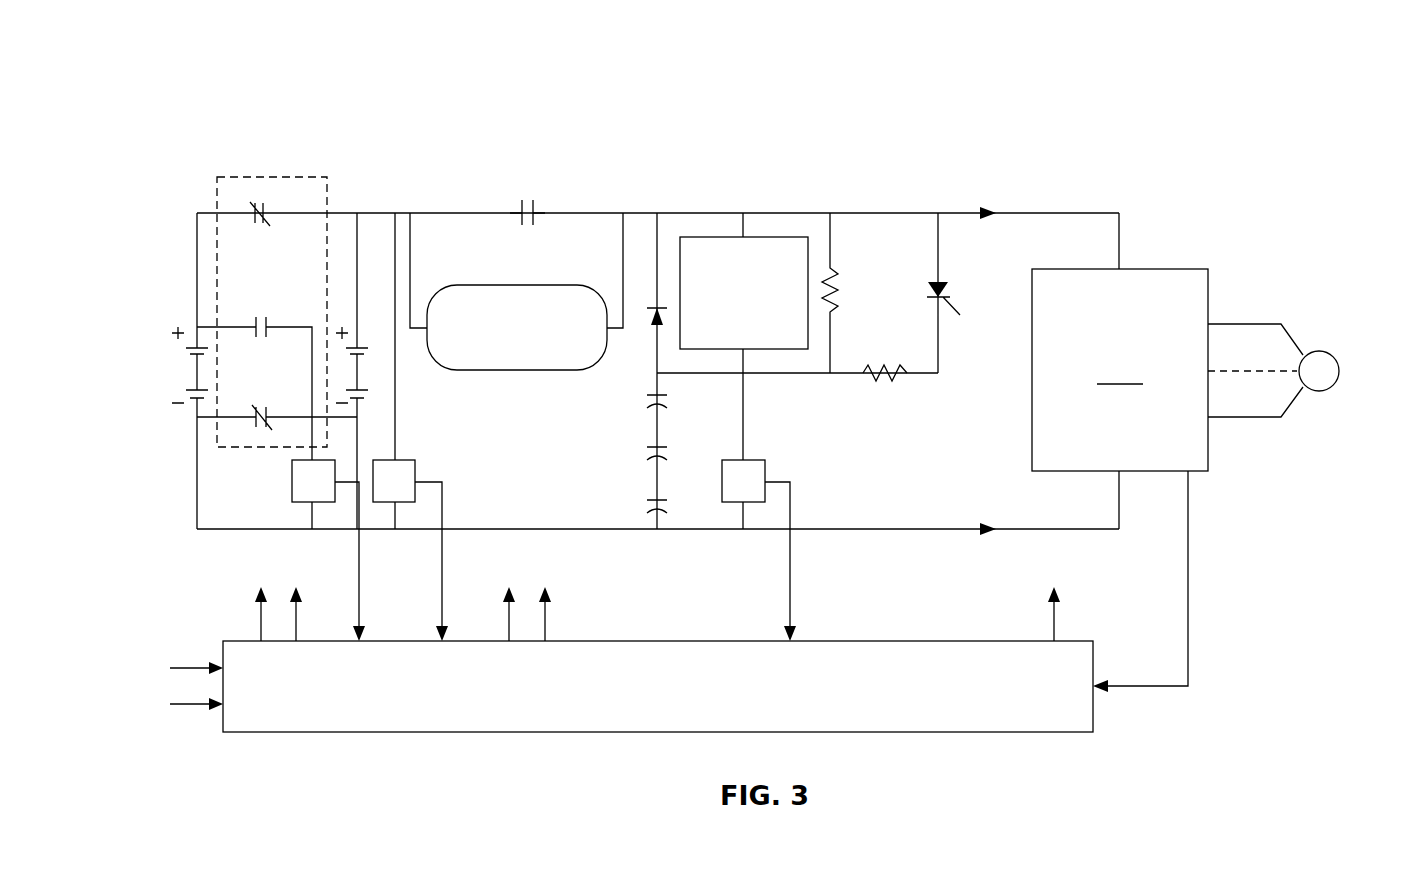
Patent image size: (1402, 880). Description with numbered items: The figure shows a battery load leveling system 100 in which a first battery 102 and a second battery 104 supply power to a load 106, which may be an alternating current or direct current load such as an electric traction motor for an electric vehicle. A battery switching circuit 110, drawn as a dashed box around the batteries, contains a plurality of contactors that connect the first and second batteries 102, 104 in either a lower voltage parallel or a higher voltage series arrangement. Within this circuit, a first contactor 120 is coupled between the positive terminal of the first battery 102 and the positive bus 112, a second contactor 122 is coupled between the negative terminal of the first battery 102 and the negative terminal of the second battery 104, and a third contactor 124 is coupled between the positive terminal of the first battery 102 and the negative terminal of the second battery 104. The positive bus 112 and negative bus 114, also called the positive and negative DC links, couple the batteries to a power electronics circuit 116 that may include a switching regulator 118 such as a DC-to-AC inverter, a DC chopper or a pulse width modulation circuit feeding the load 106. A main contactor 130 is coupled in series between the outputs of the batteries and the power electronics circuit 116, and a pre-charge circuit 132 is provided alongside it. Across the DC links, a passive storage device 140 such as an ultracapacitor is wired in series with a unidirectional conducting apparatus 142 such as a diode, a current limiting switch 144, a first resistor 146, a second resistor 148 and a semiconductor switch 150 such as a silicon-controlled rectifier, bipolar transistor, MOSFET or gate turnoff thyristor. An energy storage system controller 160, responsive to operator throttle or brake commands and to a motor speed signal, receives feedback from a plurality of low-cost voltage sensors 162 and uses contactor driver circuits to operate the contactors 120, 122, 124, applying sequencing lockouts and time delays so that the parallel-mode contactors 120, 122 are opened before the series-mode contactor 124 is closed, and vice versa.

The battery load leveling system 100 is at (178, 50).
The first battery 102 is at (160, 373).
The second battery 104 is at (380, 368).
The load 106 is at (1332, 352).
The battery switching circuit 110 is at (215, 200).
The positive bus 112 is at (637, 213).
The negative bus 114 is at (590, 530).
The power electronics circuit 116 is at (1210, 298).
The switching regulator 118 is at (1120, 371).
The first contactor 120 is at (258, 200).
The second contactor 122 is at (262, 430).
The third contactor 124 is at (262, 318).
The main contactor 130 is at (530, 200).
The pre-charge circuit 132 is at (518, 285).
The passive storage device 140 is at (636, 455).
The unidirectional conducting apparatus 142 is at (650, 308).
The current limiting switch 144 is at (772, 237).
The first resistor 146 is at (840, 293).
The second resistor 148 is at (888, 378).
The semiconductor switch 150 is at (948, 300).
The energy storage system controller 160 is at (1093, 670).
The voltage sensors 162 is at (300, 512).